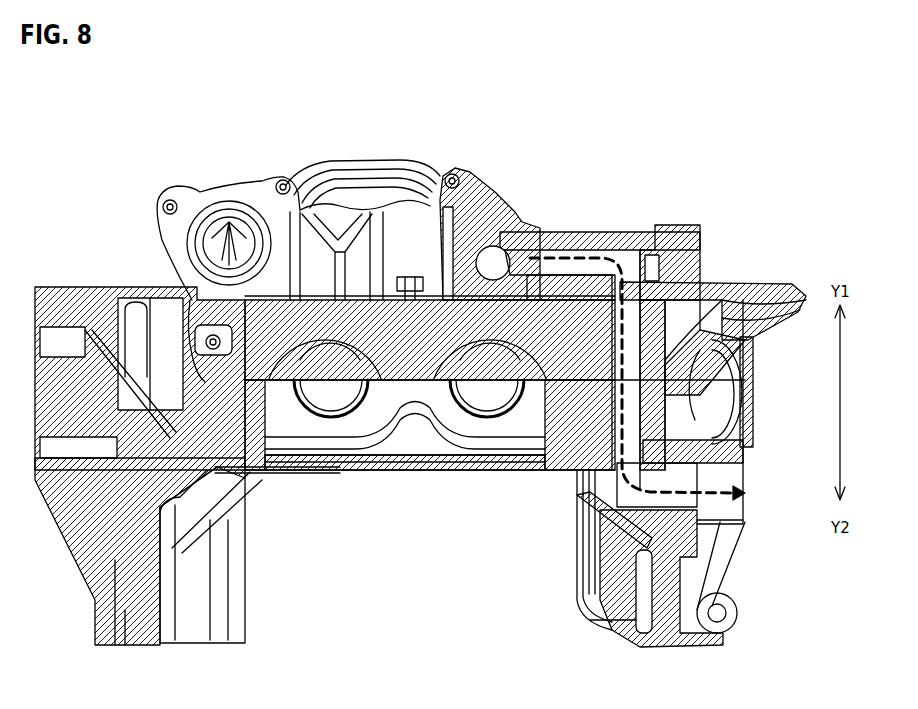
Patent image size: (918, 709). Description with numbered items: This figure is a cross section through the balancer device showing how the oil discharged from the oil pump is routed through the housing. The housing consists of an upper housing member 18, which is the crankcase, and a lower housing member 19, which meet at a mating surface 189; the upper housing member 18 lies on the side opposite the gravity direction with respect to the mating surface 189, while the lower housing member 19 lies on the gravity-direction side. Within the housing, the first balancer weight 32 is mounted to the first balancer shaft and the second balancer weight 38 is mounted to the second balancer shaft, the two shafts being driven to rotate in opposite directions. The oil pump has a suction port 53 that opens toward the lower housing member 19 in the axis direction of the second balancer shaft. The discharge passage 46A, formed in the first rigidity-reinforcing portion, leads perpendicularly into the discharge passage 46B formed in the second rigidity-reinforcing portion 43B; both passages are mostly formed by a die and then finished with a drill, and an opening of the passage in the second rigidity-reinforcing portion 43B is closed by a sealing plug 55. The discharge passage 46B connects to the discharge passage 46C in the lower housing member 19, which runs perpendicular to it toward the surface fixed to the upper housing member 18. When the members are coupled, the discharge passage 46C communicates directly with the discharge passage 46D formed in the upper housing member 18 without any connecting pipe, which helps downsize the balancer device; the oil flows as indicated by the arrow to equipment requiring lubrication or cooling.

The suction port 53 is at (226, 192).
The lower housing member 19 is at (480, 203).
The discharge passage 46A is at (493, 260).
The second rigidity-reinforcing portion 43B is at (584, 233).
The discharge passage 46B is at (613, 253).
The sealing plug 55 is at (687, 238).
The discharge passage 46C is at (637, 327).
The discharge passage 46D is at (635, 427).
The mating surface 189 is at (253, 383).
The second balancer weight 38 is at (382, 372).
The upper housing member 18 is at (462, 462).
The first balancer weight 32 is at (537, 372).